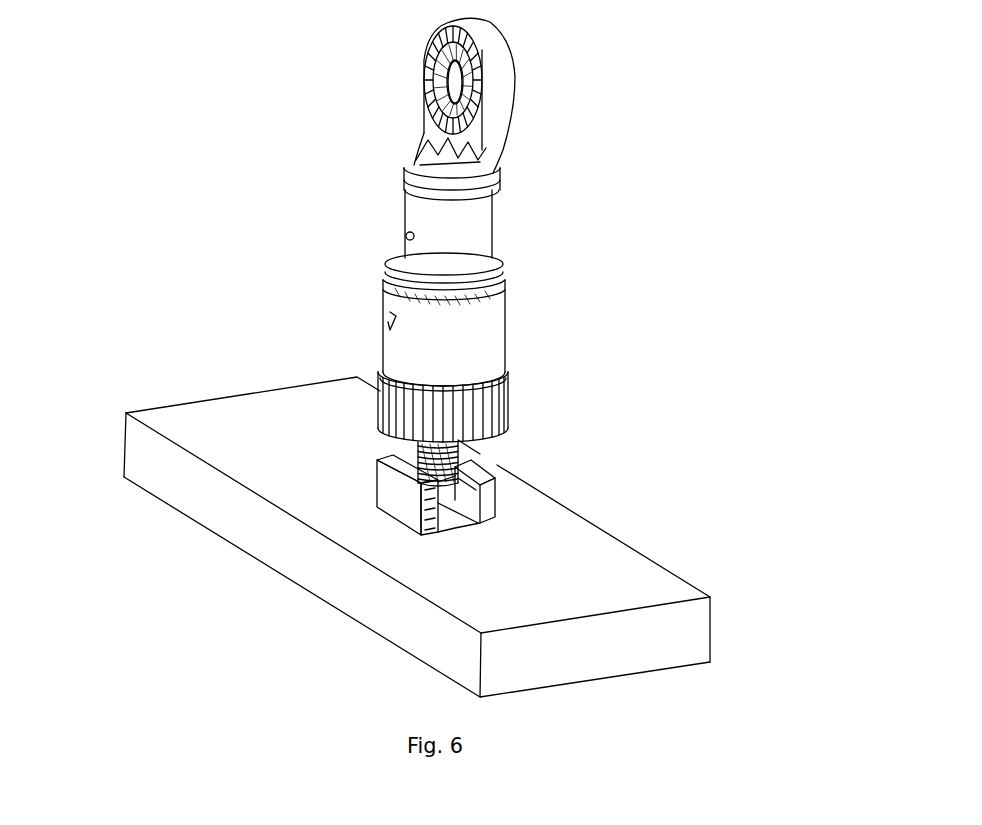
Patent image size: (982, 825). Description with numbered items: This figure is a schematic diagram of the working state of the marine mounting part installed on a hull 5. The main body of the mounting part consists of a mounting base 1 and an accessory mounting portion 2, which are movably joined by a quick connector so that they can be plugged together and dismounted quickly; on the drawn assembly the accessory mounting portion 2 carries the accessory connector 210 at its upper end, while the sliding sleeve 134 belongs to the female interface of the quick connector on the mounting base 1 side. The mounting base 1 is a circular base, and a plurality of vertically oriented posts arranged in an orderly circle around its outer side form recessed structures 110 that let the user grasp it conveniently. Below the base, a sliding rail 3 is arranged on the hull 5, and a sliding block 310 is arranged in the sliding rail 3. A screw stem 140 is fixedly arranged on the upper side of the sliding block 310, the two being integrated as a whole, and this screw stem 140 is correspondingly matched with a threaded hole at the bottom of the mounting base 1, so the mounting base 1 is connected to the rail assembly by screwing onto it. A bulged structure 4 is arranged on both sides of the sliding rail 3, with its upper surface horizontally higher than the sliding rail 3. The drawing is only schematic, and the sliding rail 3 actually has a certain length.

The mounting base 1 is at (512, 385).
The accessory mounting portion 2 is at (428, 123).
The sliding rail 3 is at (453, 523).
The bulged structure 4 is at (490, 490).
The hull 5 is at (492, 578).
The recessed structure 110 is at (400, 391).
The sliding sleeve 134 is at (470, 318).
The screw stem 140 is at (458, 457).
The accessory connector 210 is at (470, 85).
The sliding block 310 is at (453, 496).